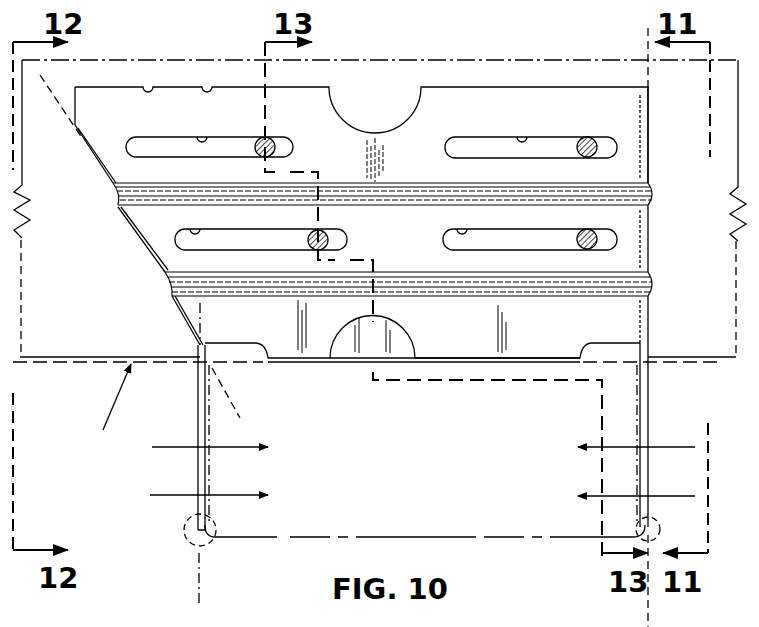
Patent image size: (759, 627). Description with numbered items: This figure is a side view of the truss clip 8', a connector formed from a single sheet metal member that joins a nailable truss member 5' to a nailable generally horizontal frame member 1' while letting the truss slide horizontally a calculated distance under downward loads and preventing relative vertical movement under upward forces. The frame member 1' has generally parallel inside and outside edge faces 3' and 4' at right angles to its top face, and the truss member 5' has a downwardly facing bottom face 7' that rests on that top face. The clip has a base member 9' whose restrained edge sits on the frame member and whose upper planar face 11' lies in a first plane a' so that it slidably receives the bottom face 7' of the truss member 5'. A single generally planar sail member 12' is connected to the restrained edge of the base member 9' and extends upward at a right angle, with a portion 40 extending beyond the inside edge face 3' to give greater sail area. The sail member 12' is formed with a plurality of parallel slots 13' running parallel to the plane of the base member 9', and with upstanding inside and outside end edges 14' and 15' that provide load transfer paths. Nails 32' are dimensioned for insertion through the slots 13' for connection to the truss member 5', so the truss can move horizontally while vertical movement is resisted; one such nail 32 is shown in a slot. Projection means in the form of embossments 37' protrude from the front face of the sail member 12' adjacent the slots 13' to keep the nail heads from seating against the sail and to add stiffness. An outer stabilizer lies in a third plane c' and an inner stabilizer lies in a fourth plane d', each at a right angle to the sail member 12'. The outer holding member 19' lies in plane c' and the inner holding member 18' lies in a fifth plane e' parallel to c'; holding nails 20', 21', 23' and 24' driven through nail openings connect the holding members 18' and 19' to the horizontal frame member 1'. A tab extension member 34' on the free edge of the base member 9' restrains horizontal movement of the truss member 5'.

The horizontal frame member 1' is at (425, 575).
The inside edge face 3' is at (228, 527).
The outside edge face 4' is at (608, 543).
The truss member 5' is at (112, 411).
The bottom face 7' is at (86, 397).
The truss clip 8' is at (674, 121).
The base member 9' is at (422, 379).
The upper planar face 11' is at (494, 390).
The sail member 12' is at (361, 123).
The slots 13' is at (371, 175).
The inside end edge 14' is at (140, 276).
The outside end edge 15' is at (677, 274).
The inner holding member 18' is at (172, 437).
The outer holding member 19' is at (671, 435).
The nail 20' is at (644, 427).
The nail 21' is at (642, 478).
The nail 23' is at (178, 463).
The nail 24' is at (182, 487).
The nails 32' is at (441, 175).
The nail 32 is at (610, 228).
The tab extension member 34' is at (394, 331).
The projection means 37' is at (402, 245).
The portion 40 is at (100, 135).
The first plane a' is at (367, 395).
The third plane c' is at (640, 327).
The fourth plane d' is at (147, 239).
The fifth plane e' is at (228, 454).